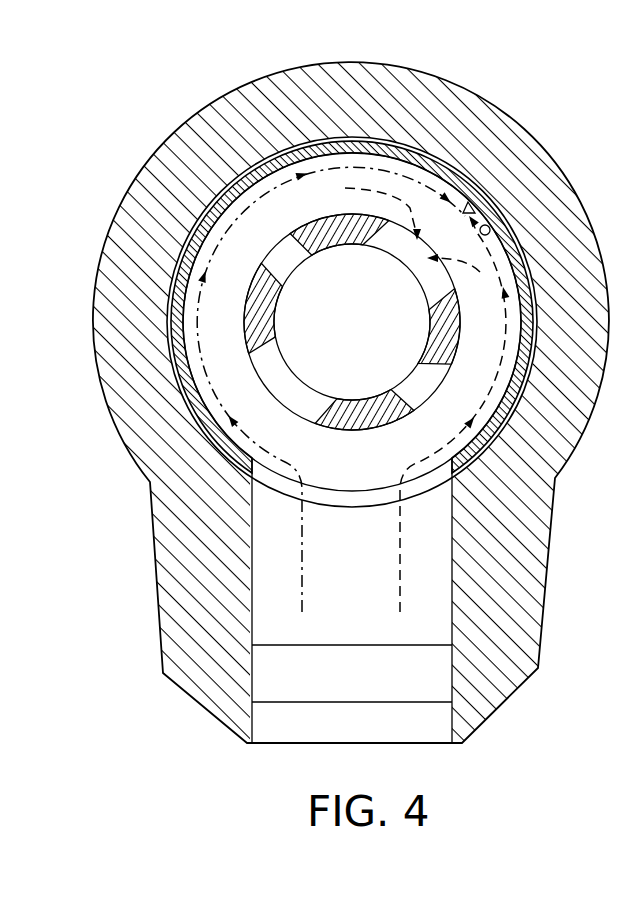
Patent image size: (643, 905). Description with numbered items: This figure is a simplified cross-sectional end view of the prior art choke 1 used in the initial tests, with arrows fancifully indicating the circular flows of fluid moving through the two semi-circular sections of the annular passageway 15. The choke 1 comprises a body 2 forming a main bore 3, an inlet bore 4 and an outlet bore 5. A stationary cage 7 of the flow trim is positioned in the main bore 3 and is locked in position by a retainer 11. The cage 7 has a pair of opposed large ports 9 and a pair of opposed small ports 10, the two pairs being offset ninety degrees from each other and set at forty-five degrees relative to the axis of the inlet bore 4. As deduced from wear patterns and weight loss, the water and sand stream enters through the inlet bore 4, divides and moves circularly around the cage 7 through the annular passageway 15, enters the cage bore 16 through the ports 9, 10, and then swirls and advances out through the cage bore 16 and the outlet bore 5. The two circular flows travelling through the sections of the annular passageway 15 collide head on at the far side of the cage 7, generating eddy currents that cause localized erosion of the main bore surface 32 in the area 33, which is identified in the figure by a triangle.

The choke 1 is at (118, 463).
The body 2 is at (470, 118).
The main bore 3 is at (523, 263).
The inlet bore 4 is at (364, 586).
The outlet bore 5 is at (347, 332).
The stationary cage 7 is at (325, 232).
The large ports 9 is at (292, 402).
The small ports 10 is at (292, 259).
The retainer 11 is at (200, 235).
The annular passageway 15 is at (234, 332).
The cage bore 16 is at (388, 361).
The main bore surface 32 is at (478, 204).
The area 33 is at (477, 203).